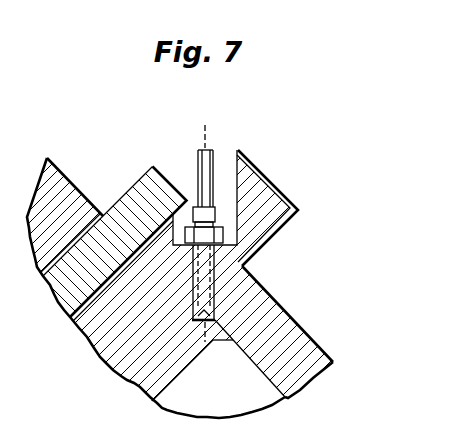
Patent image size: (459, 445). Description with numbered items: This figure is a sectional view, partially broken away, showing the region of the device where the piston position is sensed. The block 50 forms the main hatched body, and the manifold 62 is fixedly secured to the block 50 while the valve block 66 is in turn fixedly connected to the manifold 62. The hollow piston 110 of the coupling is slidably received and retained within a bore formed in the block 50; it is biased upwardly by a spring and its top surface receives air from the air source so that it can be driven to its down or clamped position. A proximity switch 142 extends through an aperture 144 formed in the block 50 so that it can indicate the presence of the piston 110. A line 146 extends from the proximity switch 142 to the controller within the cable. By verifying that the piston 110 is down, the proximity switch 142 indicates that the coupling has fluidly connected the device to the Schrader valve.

The block 50 is at (284, 223).
The valve block 66 is at (78, 188).
The manifold 62 is at (154, 165).
The hollow piston 110 is at (253, 365).
The line 146 is at (212, 150).
The proximity switch 142 is at (218, 217).
The aperture 144 is at (212, 278).